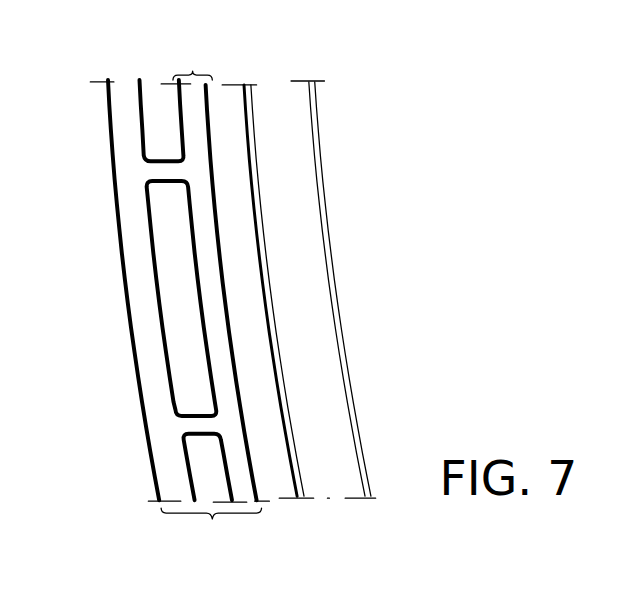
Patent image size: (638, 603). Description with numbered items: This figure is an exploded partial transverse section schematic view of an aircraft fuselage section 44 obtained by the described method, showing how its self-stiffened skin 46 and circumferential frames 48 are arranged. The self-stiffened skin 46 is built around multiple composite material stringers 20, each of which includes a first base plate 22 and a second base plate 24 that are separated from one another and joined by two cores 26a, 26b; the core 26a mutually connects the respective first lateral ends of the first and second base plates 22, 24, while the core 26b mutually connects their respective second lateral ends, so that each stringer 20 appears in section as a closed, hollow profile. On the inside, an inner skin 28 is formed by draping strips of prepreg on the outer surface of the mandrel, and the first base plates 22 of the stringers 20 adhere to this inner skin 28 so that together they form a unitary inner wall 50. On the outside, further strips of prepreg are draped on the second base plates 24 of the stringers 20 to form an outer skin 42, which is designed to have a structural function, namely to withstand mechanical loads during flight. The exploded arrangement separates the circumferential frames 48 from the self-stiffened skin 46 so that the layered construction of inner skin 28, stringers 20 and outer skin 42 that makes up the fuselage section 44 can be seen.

The composite material stringer 20 is at (136, 112).
The first base plate 22 is at (195, 297).
The second base plate 24 is at (154, 262).
The core 26a is at (183, 410).
The core 26b is at (157, 187).
The inner skin 28 is at (220, 260).
The outer skin 42 is at (128, 328).
The fuselage section 44 is at (403, 333).
The self-stiffened skin 46 is at (211, 528).
The circumferential frame 48 is at (337, 293).
The inner wall 50 is at (192, 64).